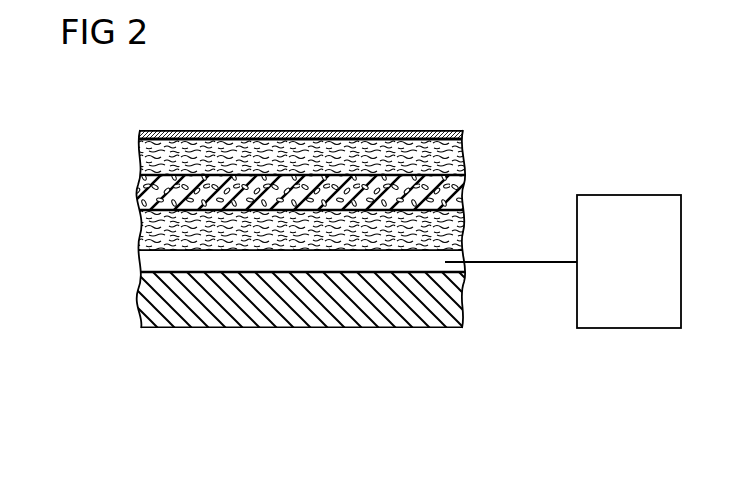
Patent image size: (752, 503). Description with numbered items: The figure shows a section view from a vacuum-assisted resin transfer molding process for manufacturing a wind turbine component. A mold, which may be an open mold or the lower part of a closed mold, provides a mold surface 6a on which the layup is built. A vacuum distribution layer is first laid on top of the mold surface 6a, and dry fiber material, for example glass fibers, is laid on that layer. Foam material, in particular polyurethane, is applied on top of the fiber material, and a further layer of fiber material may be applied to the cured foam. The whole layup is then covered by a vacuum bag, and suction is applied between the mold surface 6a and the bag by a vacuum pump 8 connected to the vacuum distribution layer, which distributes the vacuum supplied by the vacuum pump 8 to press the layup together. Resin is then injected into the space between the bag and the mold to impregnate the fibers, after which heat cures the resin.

The mold surface 6a is at (152, 271).
The vacuum pump 8 is at (630, 195).